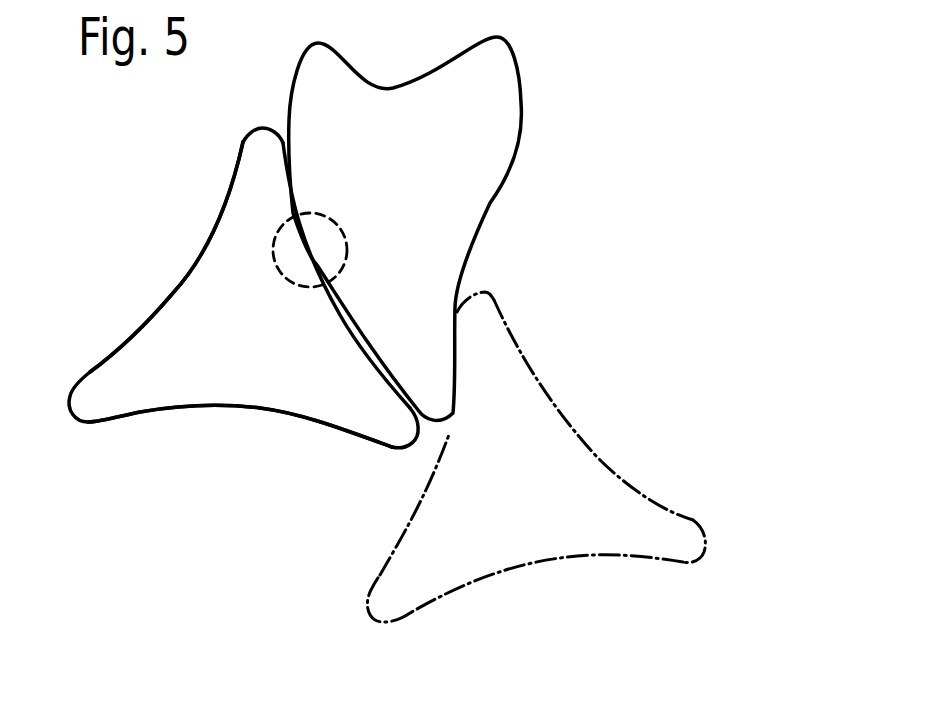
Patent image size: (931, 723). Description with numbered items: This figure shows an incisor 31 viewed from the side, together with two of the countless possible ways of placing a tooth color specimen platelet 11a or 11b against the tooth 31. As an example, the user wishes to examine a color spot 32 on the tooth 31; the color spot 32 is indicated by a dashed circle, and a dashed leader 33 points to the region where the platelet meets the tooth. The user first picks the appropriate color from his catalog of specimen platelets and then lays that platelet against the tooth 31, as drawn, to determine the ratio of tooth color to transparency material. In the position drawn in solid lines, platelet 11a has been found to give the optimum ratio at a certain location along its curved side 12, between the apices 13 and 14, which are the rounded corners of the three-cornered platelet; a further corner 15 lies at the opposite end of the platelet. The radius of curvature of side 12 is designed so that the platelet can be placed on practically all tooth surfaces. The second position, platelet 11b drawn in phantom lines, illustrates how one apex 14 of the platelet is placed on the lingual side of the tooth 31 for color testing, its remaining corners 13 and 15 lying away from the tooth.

The tooth color specimen platelet 11a is at (175, 420).
The tooth color specimen platelet 11b is at (593, 438).
The side 12 is at (175, 293).
The apex 13 is at (416, 442).
The apex 14 is at (260, 128).
The tooth corner 15 is at (72, 410).
The incisor 31 is at (503, 105).
The color spot 32 is at (332, 228).
The contact line 33 is at (275, 250).